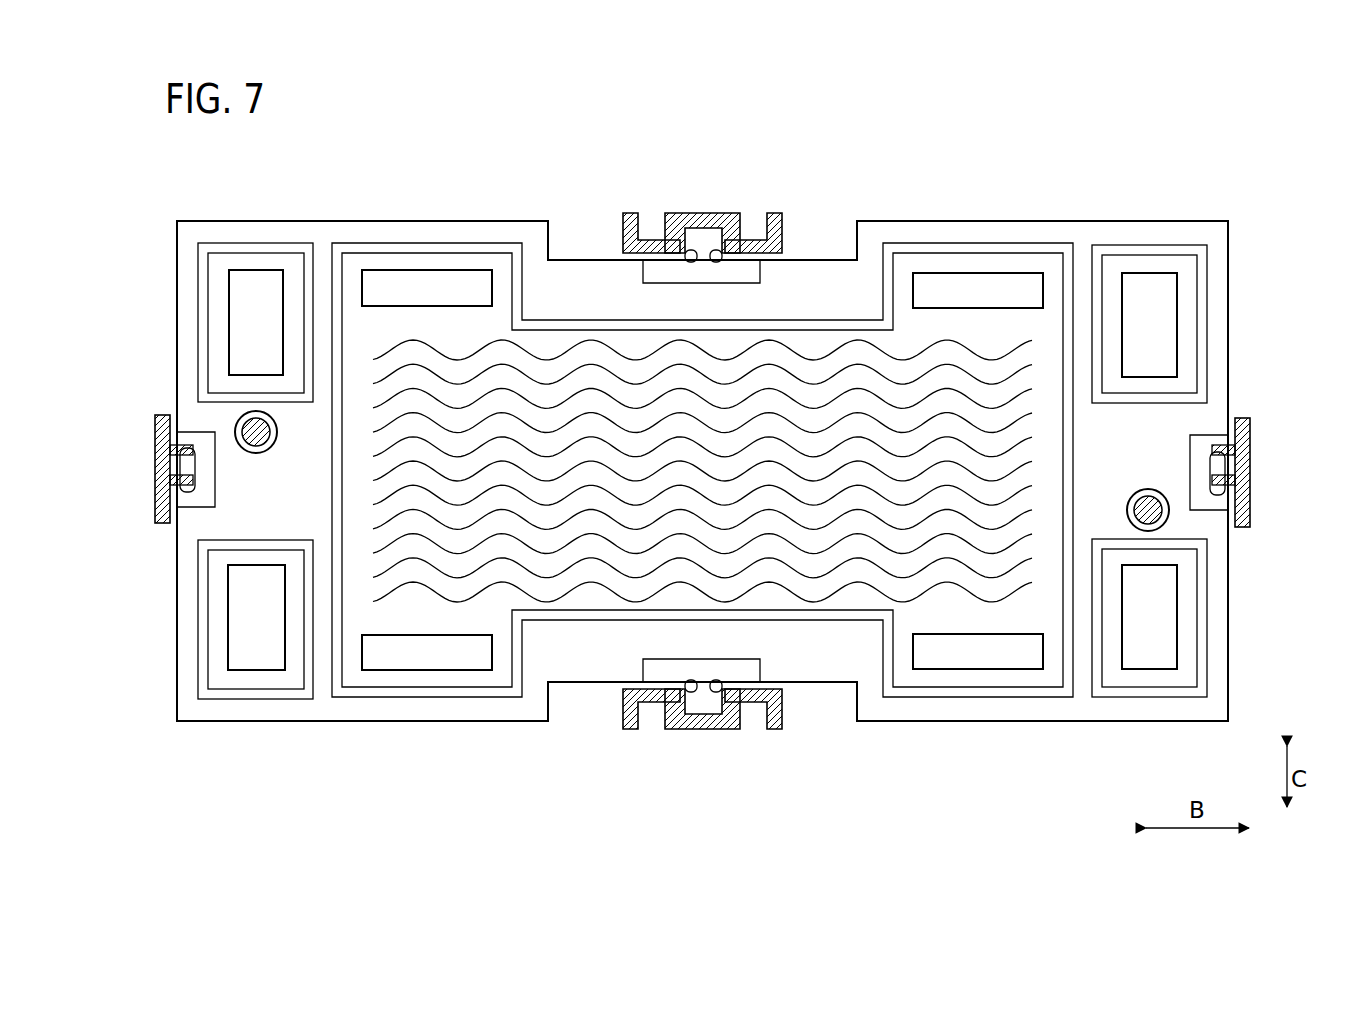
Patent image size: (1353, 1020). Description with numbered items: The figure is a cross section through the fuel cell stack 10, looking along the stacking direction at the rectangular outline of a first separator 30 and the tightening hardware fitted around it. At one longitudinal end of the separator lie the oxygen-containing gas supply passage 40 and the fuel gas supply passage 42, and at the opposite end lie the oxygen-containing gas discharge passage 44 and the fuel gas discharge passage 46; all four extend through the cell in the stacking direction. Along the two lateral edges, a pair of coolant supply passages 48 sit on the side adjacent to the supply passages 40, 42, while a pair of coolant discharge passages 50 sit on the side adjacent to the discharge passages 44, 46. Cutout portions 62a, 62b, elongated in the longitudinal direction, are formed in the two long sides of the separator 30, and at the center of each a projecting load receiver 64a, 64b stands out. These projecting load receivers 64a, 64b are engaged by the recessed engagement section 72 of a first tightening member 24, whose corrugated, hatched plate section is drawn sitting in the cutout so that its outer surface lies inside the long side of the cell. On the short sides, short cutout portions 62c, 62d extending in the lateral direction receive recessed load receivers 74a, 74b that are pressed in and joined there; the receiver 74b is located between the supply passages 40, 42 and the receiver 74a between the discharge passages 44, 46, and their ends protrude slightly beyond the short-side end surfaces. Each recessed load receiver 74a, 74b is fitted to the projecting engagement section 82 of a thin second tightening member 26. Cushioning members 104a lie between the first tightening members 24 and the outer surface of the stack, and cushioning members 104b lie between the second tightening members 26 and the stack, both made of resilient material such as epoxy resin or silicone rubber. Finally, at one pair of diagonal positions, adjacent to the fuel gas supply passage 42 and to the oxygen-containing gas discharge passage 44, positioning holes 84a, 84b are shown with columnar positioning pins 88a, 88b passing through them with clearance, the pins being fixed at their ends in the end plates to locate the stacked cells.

The battery module 10 is at (217, 164).
The first tightening member 24 is at (724, 211).
The second tightening member 26 is at (151, 415).
The first separator 30 is at (1179, 218).
The oxygen-containing gas supply passage 40 is at (1172, 344).
The fuel gas supply passage 42 is at (1172, 646).
The oxygen-containing gas discharge passage 44 is at (243, 670).
The fuel gas discharge passage 46 is at (232, 298).
The coolant supply passage 48 is at (988, 305).
The coolant discharge passage 50 is at (490, 290).
The cutout portion 62a is at (578, 258).
The cutout portion 62b is at (583, 684).
The short cutout portion 62c is at (166, 514).
The short cutout portion 62d is at (1238, 432).
The projecting load receiver 64a is at (641, 285).
The projecting load receiver 64b is at (767, 665).
The recessed engagement section 72 is at (703, 708).
The recessed load receiver 74a is at (205, 500).
The recessed load receiver 74b is at (1203, 443).
The projecting engagement section 82 is at (186, 470).
The positioning hole 84a is at (1142, 490).
The positioning hole 84b is at (273, 443).
The positioning pin 88a is at (1162, 527).
The positioning pin 88b is at (248, 420).
The cushioning member 104a is at (730, 262).
The cushioning member 104b is at (176, 458).